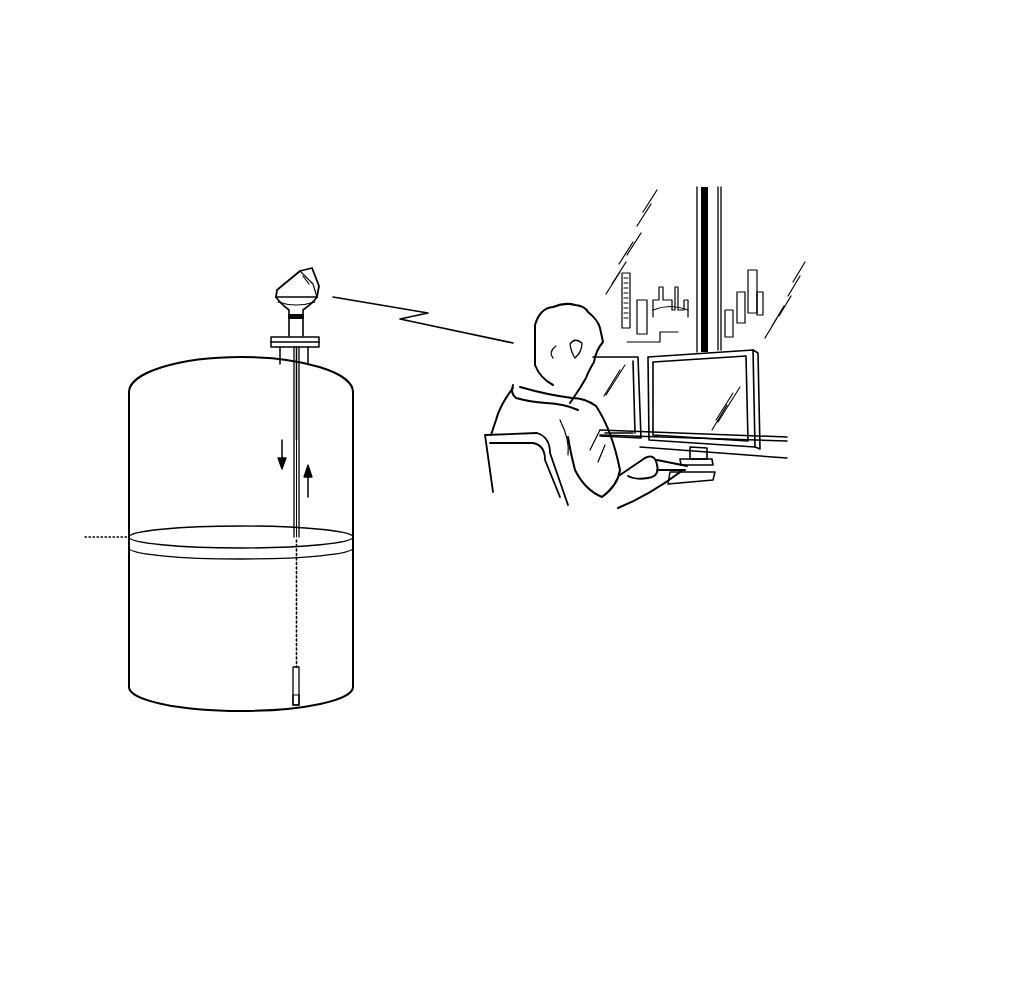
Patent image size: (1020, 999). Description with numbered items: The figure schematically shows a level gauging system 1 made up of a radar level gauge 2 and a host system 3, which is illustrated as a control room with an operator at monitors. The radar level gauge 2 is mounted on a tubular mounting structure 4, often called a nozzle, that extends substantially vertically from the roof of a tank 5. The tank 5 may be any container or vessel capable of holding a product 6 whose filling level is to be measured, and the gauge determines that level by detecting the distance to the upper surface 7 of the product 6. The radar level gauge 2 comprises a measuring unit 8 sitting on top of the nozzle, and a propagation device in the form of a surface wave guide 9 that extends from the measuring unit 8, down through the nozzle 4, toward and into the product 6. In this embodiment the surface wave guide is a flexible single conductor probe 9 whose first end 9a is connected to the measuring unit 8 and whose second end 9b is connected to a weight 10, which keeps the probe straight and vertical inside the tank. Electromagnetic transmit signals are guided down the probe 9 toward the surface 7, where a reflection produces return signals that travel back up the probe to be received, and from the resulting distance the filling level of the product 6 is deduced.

The level gauging system 1 is at (573, 60).
The radar level gauge 2 is at (257, 273).
The host system 3 is at (742, 242).
The tubular mounting structure 4 is at (312, 355).
The tank 5 is at (129, 480).
The product 6 is at (224, 638).
The upper surface 7 is at (211, 537).
The measuring unit 8 is at (289, 282).
The surface wave guide 9 is at (298, 443).
The first end 9a is at (299, 352).
The second end 9b is at (295, 668).
The weight 10 is at (300, 696).